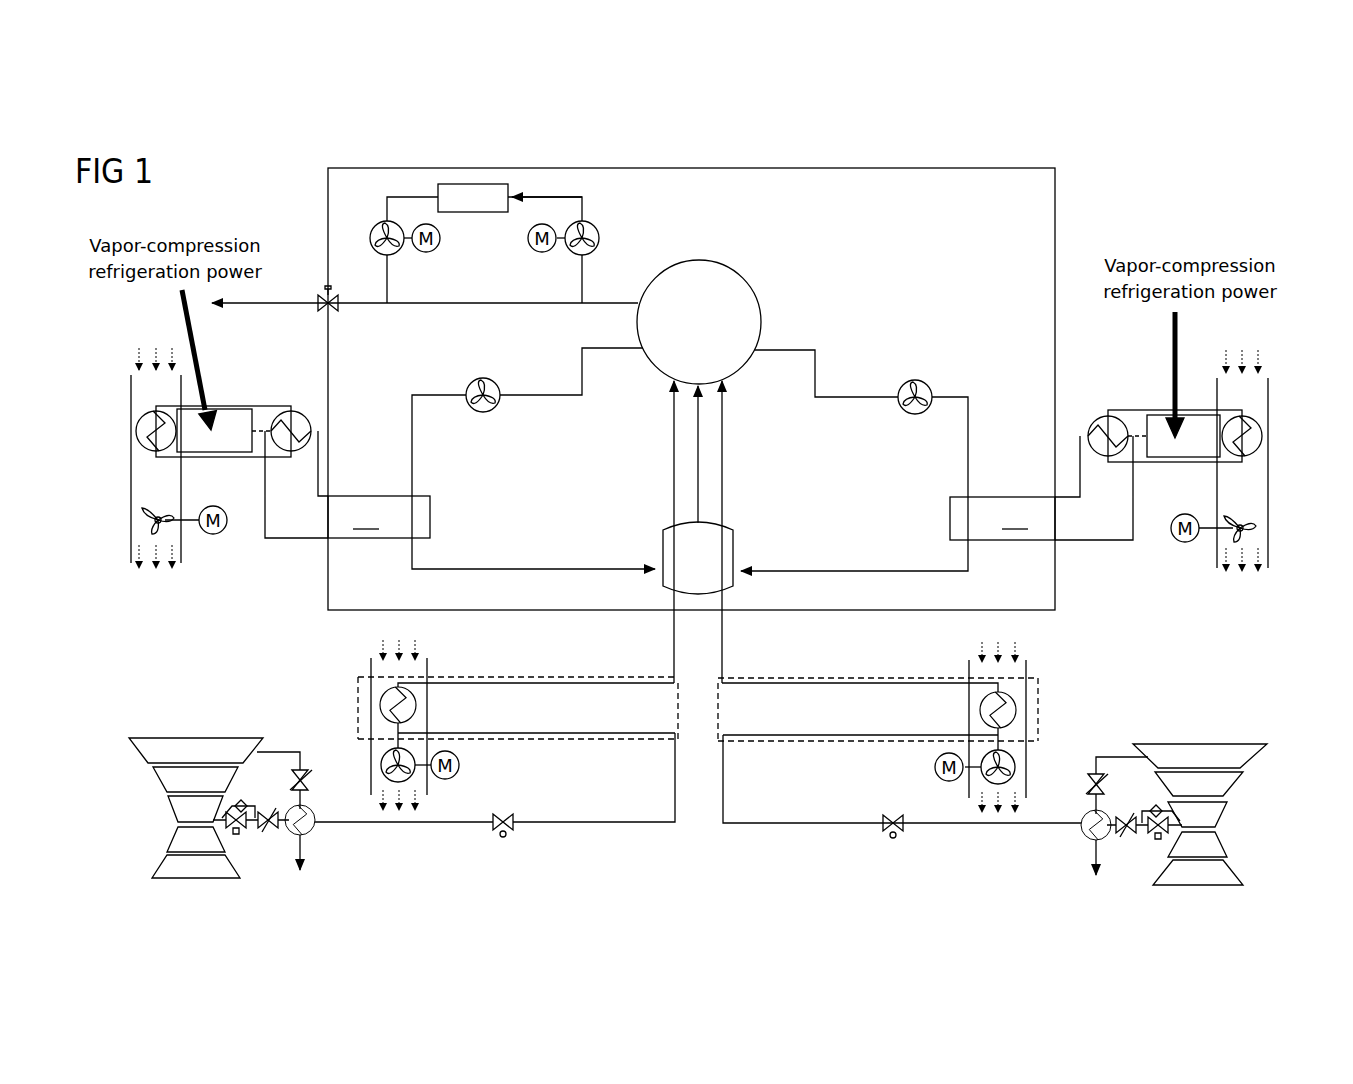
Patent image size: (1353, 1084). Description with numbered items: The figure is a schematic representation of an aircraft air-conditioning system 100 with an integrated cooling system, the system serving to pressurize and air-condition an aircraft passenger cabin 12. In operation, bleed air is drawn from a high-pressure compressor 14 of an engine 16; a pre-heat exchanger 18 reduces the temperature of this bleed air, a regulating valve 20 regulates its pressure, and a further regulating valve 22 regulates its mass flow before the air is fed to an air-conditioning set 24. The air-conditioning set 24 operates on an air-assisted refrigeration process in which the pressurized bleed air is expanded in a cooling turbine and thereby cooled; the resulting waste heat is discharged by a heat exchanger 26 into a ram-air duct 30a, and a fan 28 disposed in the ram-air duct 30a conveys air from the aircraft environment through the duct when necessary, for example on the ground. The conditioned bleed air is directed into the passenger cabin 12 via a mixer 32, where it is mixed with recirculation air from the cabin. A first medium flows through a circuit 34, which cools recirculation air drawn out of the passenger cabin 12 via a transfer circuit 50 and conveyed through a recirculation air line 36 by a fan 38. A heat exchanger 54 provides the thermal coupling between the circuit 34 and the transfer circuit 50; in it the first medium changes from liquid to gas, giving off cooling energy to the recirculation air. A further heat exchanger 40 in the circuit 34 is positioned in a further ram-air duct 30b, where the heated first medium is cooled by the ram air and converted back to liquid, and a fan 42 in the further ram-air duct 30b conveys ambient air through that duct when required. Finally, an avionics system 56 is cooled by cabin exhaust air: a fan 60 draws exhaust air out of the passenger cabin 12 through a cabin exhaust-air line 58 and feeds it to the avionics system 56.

The aircraft air-conditioning system 100 is at (1142, 206).
The aircraft passenger cabin 12 is at (702, 258).
The high-pressure compressor 14 is at (245, 798).
The engine 16 is at (200, 736).
The pre-heat exchanger 18 is at (315, 833).
The regulating valve 20 is at (266, 834).
The further regulating valve 22 is at (503, 812).
The air-conditioning set 24 is at (518, 676).
The heat exchanger 26 is at (383, 708).
The fan 28 is at (380, 766).
The ram-air duct 30a is at (365, 688).
The further ram-air duct 30b is at (140, 484).
The mixer 32 is at (733, 542).
The circuit 34 is at (269, 373).
The recirculation air line 36 is at (539, 398).
The fan 38 is at (485, 378).
The heat exchanger 40 is at (135, 430).
The fan 42 is at (163, 514).
The transfer circuit 50 is at (699, 485).
The heat exchanger 54 is at (293, 410).
The avionics system 56 is at (479, 214).
The cabin exhaust-air line 58 is at (610, 302).
The fan 60 is at (599, 225).